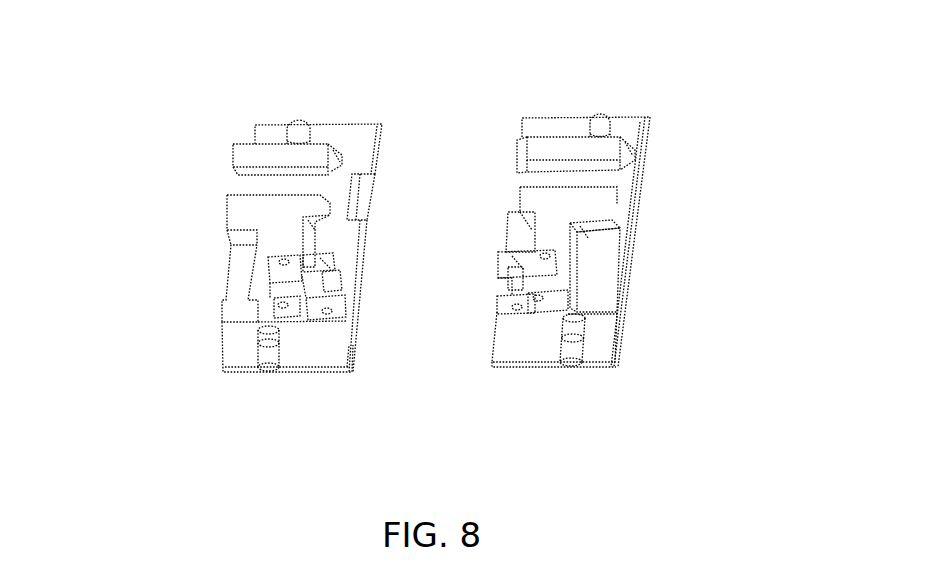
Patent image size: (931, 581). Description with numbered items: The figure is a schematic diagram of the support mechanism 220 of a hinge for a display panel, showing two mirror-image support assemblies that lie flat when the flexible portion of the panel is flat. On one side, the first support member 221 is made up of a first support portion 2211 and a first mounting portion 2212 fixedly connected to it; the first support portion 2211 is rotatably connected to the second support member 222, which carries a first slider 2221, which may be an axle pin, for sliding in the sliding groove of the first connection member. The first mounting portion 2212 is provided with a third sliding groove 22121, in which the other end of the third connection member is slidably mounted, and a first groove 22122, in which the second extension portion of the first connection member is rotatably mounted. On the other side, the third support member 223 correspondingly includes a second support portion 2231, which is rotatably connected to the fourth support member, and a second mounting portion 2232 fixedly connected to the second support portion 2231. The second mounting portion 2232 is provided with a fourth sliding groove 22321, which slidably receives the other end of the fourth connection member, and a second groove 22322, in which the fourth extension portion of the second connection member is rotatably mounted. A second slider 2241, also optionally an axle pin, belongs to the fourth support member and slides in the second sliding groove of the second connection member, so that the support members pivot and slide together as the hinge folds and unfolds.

The support mechanism 220 is at (215, 28).
The first support member 221 is at (189, 443).
The first support portion 2211 is at (250, 332).
The first mounting portion 2212 is at (214, 311).
The third sliding groove 22121 is at (242, 188).
The first groove 22122 is at (266, 268).
The second support member 222 is at (325, 345).
The first slider 2221 is at (338, 288).
The third support member 223 is at (517, 345).
The second support portion 2231 is at (595, 322).
The second mounting portion 2232 is at (620, 305).
The fourth sliding groove 22321 is at (628, 183).
The second groove 22322 is at (558, 265).
The second slider 2241 is at (510, 280).